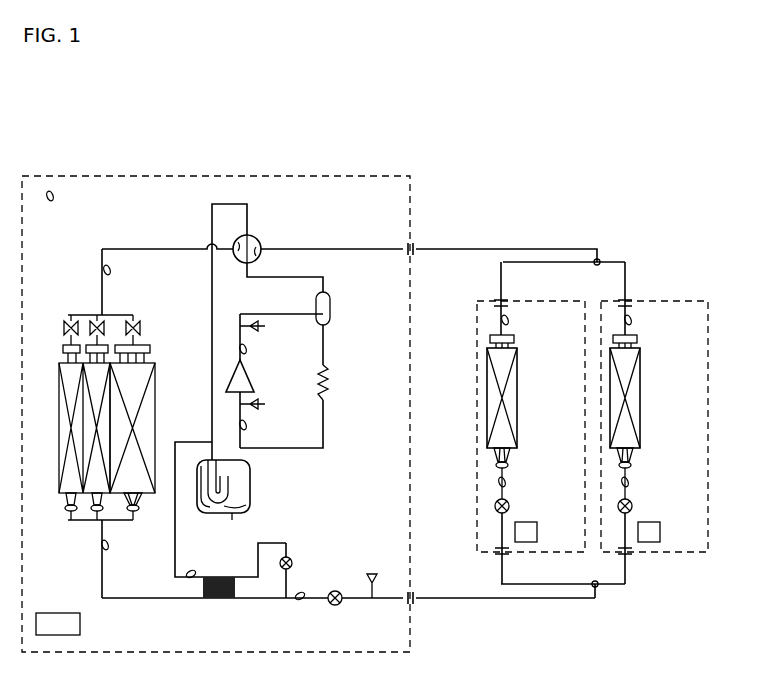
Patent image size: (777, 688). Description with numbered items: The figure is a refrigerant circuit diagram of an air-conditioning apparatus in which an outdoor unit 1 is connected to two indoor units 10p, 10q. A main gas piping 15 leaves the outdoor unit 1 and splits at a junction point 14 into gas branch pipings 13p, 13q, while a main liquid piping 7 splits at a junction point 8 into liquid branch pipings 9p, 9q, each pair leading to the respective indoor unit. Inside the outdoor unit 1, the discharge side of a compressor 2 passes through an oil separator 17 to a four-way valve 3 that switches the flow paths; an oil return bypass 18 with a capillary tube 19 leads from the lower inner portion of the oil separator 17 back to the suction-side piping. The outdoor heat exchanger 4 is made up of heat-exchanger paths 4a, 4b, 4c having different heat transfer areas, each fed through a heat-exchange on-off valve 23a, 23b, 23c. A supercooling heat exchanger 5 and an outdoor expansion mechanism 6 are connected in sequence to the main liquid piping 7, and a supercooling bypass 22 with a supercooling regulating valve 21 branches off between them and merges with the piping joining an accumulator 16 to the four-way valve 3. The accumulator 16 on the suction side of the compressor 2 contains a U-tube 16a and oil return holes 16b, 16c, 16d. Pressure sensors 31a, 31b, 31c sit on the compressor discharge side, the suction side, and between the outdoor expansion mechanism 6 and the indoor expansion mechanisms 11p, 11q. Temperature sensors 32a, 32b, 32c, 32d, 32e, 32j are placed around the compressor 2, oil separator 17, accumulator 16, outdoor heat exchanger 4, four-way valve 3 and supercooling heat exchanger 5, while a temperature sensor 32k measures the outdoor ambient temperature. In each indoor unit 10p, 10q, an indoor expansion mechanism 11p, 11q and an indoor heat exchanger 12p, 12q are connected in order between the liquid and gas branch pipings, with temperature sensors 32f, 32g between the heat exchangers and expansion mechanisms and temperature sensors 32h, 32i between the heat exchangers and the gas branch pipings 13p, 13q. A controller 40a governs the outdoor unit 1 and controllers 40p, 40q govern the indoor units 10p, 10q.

The outdoor unit 1 is at (215, 176).
The compressor 2 is at (256, 381).
The four-way valve 3 is at (257, 240).
The outdoor heat exchanger 4 is at (108, 398).
The heat-exchanger path 4a is at (150, 428).
The heat-exchanger path 4b is at (85, 436).
The heat-exchanger path 4c is at (62, 488).
The supercooling heat exchanger 5 is at (240, 597).
The outdoor expansion mechanism 6 is at (343, 604).
The main liquid piping 7 is at (470, 599).
The junction point 8 is at (598, 586).
The liquid branch piping 9p is at (506, 575).
The liquid branch piping 9q is at (629, 575).
The indoor unit 10p is at (556, 303).
The indoor unit 10q is at (680, 303).
The indoor expansion mechanism 11p is at (510, 503).
The indoor expansion mechanism 11q is at (633, 503).
The indoor heat exchanger 12p is at (518, 382).
The indoor heat exchanger 12q is at (641, 382).
The gas branch piping 13p is at (503, 283).
The gas branch piping 13q is at (628, 283).
The junction point 14 is at (600, 261).
The main gas piping 15 is at (487, 247).
The accumulator 16 is at (245, 502).
The U-tube 16a is at (203, 508).
The oil return hole 16b is at (232, 520).
The oil return hole 16c is at (248, 505).
The oil return hole 16d is at (230, 484).
The oil separator 17 is at (332, 307).
The oil return bypass 18 is at (328, 349).
The capillary tube 19 is at (330, 383).
The supercooling regulating valve 21 is at (292, 561).
The supercooling bypass 22 is at (287, 543).
The heat-exchange on-off valve 23a is at (142, 328).
The heat-exchange on-off valve 23b is at (85, 315).
The heat-exchange on-off valve 23c is at (62, 328).
The pressure sensor 31a is at (266, 327).
The pressure sensor 31b is at (266, 405).
The pressure sensor 31c is at (372, 574).
The temperature sensor 32a is at (247, 350).
The temperature sensor 32b is at (247, 426).
The temperature sensor 32c is at (111, 271).
The temperature sensor 32d is at (109, 548).
The temperature sensor 32e is at (304, 594).
The temperature sensor 32f is at (508, 474).
The temperature sensor 32g is at (631, 474).
The temperature sensor 32h is at (509, 321).
The temperature sensor 32i is at (632, 321).
The temperature sensor 32j is at (194, 573).
The temperature sensor 32k is at (54, 196).
The controller 40a is at (80, 625).
The controller 40p is at (537, 532).
The controller 40q is at (660, 532).